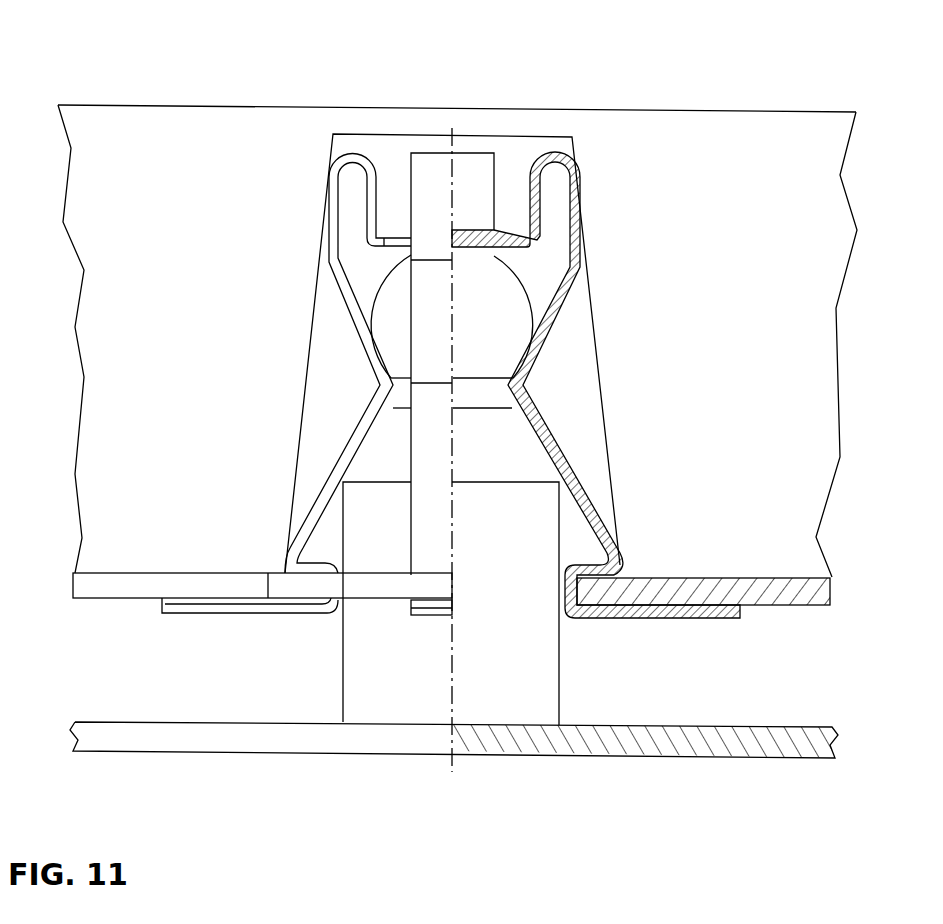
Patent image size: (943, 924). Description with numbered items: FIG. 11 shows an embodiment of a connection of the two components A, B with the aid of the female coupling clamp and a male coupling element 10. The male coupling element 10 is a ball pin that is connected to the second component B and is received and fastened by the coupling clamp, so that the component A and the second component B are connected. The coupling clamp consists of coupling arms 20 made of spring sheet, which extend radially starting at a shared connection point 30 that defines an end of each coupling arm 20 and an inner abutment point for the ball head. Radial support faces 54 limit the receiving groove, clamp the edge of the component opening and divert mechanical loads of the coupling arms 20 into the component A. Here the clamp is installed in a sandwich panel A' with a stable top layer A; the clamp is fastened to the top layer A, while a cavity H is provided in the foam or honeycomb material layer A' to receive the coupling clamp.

The male coupling element 10 is at (572, 682).
The coupling arm 20 is at (348, 435).
The connection point 30 is at (510, 233).
The radial support face 54 is at (253, 605).
The component A is at (451, 629).
The sandwich panel A' is at (457, 299).
The second component B is at (797, 743).
The cavity H is at (590, 272).